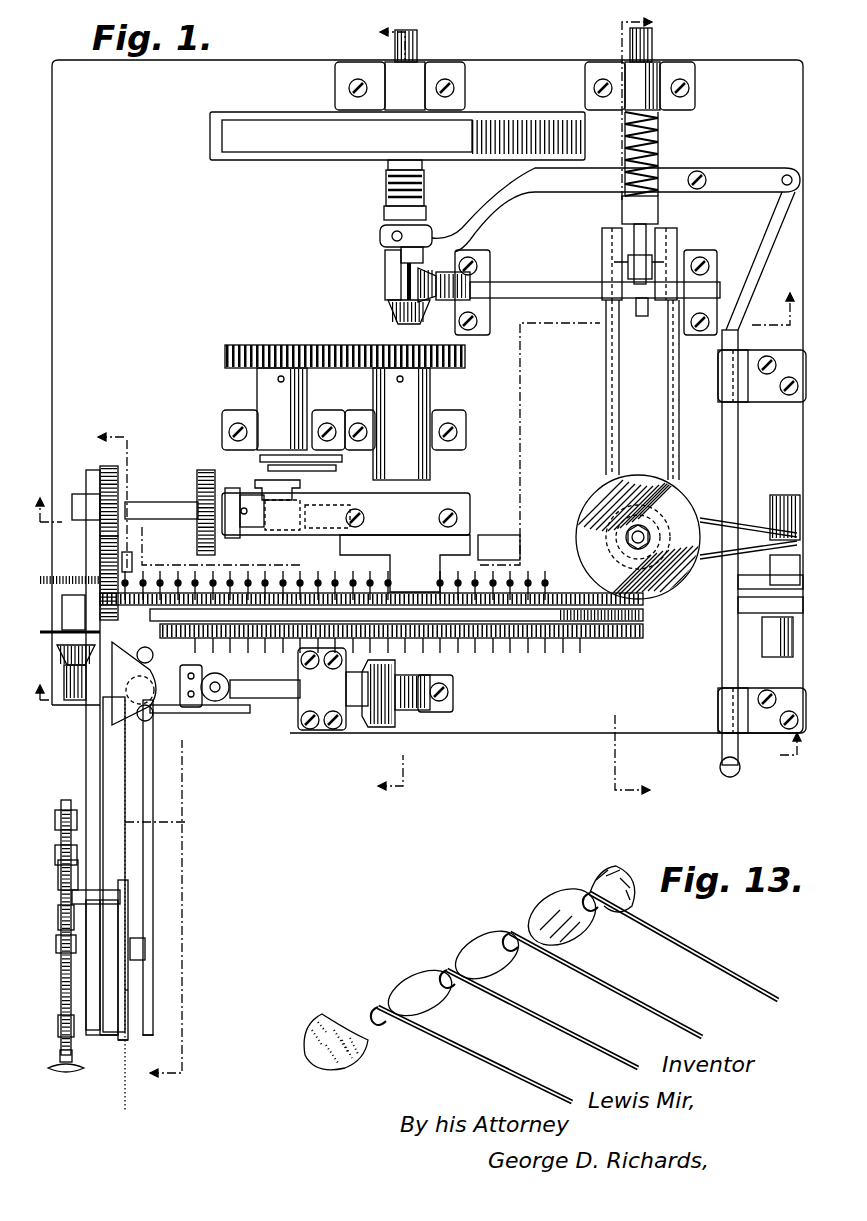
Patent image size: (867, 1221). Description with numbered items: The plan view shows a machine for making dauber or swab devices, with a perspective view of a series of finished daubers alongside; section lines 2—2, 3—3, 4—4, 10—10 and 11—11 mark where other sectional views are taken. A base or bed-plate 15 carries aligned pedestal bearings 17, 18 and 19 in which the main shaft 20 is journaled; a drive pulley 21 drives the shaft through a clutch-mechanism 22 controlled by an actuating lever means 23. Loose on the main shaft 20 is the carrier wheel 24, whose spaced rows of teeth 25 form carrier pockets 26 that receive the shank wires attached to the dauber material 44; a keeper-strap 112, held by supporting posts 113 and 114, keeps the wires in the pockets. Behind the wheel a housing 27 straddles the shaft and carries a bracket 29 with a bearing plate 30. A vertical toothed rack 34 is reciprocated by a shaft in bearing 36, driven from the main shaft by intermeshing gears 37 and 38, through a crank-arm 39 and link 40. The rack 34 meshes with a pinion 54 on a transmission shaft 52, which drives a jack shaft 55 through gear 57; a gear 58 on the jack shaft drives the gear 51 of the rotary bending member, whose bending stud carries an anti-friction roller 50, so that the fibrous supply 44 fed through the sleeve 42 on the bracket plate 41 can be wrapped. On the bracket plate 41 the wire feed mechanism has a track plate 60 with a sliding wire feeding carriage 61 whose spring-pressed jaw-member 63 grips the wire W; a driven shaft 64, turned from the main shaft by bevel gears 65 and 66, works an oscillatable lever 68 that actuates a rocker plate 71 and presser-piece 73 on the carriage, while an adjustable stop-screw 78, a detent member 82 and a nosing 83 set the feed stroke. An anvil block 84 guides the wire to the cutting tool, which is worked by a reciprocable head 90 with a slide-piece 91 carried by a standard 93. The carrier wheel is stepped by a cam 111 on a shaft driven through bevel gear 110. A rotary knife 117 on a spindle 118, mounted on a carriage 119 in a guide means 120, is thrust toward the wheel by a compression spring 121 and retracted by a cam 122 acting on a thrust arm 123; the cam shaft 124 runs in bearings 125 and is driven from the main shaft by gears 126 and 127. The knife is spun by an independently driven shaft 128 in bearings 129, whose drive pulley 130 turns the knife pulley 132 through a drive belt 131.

In FIG. 1, the section line 2— 2 is at (415, 732).
In FIG. 1, the section line 3— 3 is at (132, 769).
In FIG. 1, the section line 4— 4 is at (378, 412).
In FIG. 1, the section line 10— 10 is at (640, 408).
In FIG. 1, the section line 11— 11 is at (412, 397).
In FIG. 1, the base or bed-plate 15 is at (427, 396).
In FIG. 1, the pedestal bearing 17 is at (420, 62).
In FIG. 1, the pedestal bearing 18 is at (430, 404).
In FIG. 1, the pedestal bearing 19 is at (432, 708).
In FIG. 1, the main shaft 20 is at (385, 269).
In FIG. 1, the drive pulley 21 is at (274, 150).
In FIG. 1, the clutch-mechanism 22 is at (380, 237).
In FIG. 1, the actuating lever means 23 is at (749, 178).
In FIG. 1, the conveyer or carrier wheel 24 is at (604, 640).
In FIG. 1, the radial projections or teeth 25 is at (578, 652).
In FIG. 1, the carrier pockets 26 is at (558, 592).
In FIG. 1, the housing 27 is at (470, 530).
In FIG. 1, the bracket 29 is at (322, 536).
In FIG. 1, the bearing plate 30 is at (230, 496).
In FIG. 1, the vertical toothed rack 34 is at (265, 486).
In FIG. 1, the bearing 36 is at (258, 415).
In FIG. 1, the gear 37 is at (465, 357).
In FIG. 1, the gear 38 is at (320, 337).
In FIG. 1, the crank-arm 39 is at (330, 459).
In FIG. 1, the link 40 is at (330, 470).
In FIG. 1, the bracket plate 41 is at (86, 770).
In FIG. 1, the sleeve 42 is at (80, 592).
In FIG. 1, the supply of fibrous material 44 is at (56, 576).
In FIG. 13, the supply of fibrous material 44 is at (410, 990).
In FIG. 1, the anti-friction roller 50 is at (130, 556).
In FIG. 1, the gear 51 is at (100, 552).
In FIG. 1, the transmission shaft 52 is at (346, 512).
In FIG. 1, the pinion 54 is at (284, 535).
In FIG. 1, the jack shaft 55 is at (172, 494).
In FIG. 1, the gear 57 is at (198, 478).
In FIG. 1, the gear 58 is at (109, 468).
In FIG. 1, the track plate 60 is at (110, 800).
In FIG. 1, the wire feeding carriage 61 is at (108, 935).
In FIG. 1, the yieldable spring-pressed jaw-member 63 is at (120, 900).
In FIG. 1, the driven shaft 64 is at (268, 680).
In FIG. 1, the bevel gear 65 is at (428, 668).
In FIG. 1, the bevel gear 66 is at (380, 716).
In FIG. 1, the oscillatable lever 68 is at (153, 782).
In FIG. 1, the rocker plate 71 is at (148, 968).
In FIG. 1, the presser-piece 73 is at (124, 988).
In FIG. 1, the adjustable stop-screw 78 is at (62, 1005).
In FIG. 1, the detent member 82 is at (72, 897).
In FIG. 1, the nosing 83 is at (58, 878).
In FIG. 1, the anvil block 84 is at (64, 682).
In FIG. 1, the vertically reciprocable head 90 is at (120, 706).
In FIG. 1, the depending slide-piece 91 is at (200, 722).
In FIG. 1, the standard 93 is at (222, 678).
In FIG. 1, the bevel gear 110 is at (57, 652).
In FIG. 1, the cam 111 is at (64, 613).
In FIG. 1, the keeper-strap 112 is at (478, 650).
In FIG. 1, the supporting post 113 is at (420, 575).
In FIG. 1, the supporting post 114 is at (499, 547).
In FIG. 1, the rotary cutting blade or knife 117 is at (597, 500).
In FIG. 1, the spindle 118 is at (628, 538).
In FIG. 1, the movable carriage 119 is at (633, 371).
In FIG. 1, the guide means 120 is at (604, 394).
In FIG. 1, the compression spring 121 is at (660, 158).
In FIG. 1, the rotating cam 122 is at (636, 318).
In FIG. 1, the abutment or thrust arm 123 is at (628, 239).
In FIG. 1, the shaft 124 is at (552, 295).
In FIG. 1, the bearings 125 is at (495, 275).
In FIG. 1, the gear 126 is at (388, 309).
In FIG. 1, the gear 127 is at (418, 288).
In FIG. 1, the independently driven shaft 128 is at (770, 562).
In FIG. 1, the bearings 129 is at (760, 505).
In FIG. 1, the drive pulley 130 is at (780, 530).
In FIG. 1, the drive belt 131 is at (710, 515).
In FIG. 1, the knife pulley 132 is at (616, 528).
In FIG. 1, the wire W is at (165, 825).
In FIG. 13, the wire W is at (546, 1010).